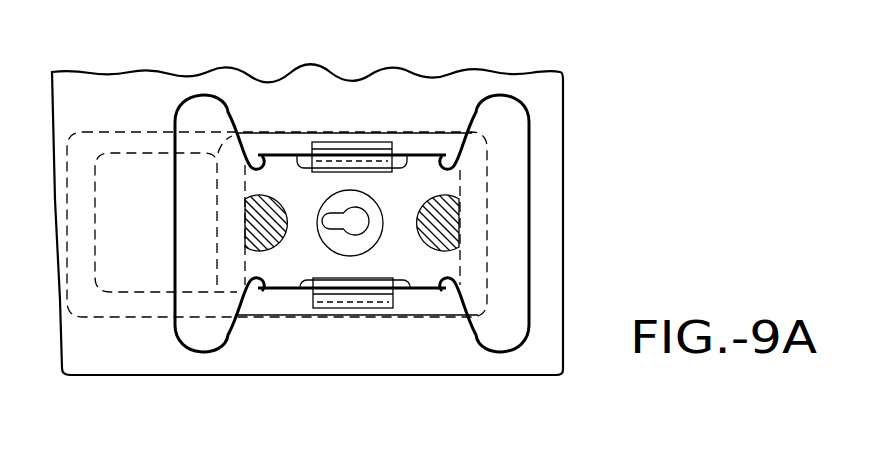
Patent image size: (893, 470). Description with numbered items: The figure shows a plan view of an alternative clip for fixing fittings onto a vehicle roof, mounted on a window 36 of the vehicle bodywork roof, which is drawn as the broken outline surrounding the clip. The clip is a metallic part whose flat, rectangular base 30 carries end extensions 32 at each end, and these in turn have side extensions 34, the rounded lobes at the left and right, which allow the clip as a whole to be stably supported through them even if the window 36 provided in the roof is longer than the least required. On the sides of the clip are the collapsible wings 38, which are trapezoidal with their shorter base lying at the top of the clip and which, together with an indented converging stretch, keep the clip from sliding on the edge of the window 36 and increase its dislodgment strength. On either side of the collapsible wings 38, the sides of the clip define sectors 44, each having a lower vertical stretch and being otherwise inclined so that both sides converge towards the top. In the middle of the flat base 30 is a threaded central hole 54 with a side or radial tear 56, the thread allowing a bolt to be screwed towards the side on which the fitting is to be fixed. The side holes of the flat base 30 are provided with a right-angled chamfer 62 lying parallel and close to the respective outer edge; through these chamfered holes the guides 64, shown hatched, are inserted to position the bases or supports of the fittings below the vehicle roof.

The flat base 30 is at (377, 262).
The end extensions 32 is at (203, 290).
The side extensions 34 is at (205, 110).
The window 36 is at (135, 175).
The collapsible wings 38 is at (368, 143).
The sectors 44 is at (287, 295).
The central hole 54 is at (363, 222).
The radial tear 56 is at (331, 210).
The right-angled chamfer 62 is at (245, 232).
The guides 64 is at (270, 213).